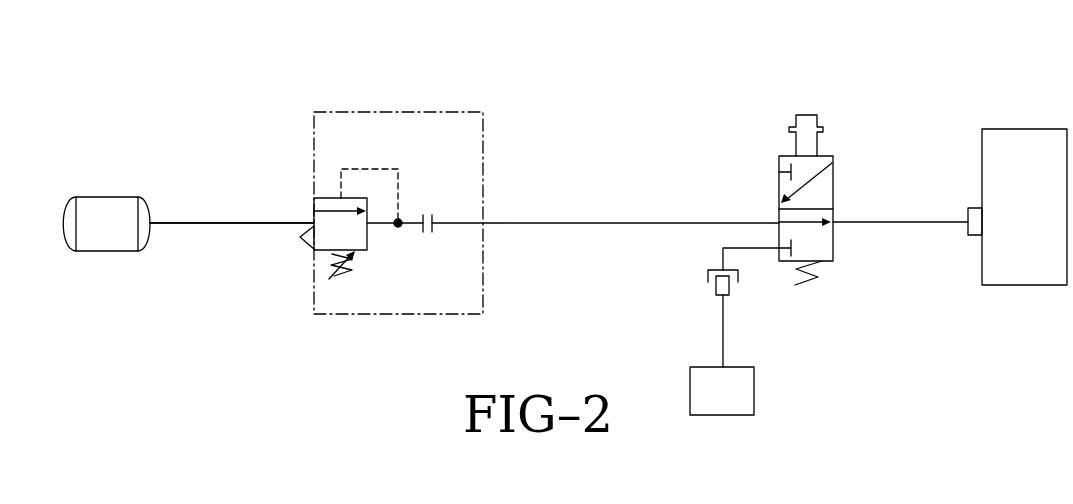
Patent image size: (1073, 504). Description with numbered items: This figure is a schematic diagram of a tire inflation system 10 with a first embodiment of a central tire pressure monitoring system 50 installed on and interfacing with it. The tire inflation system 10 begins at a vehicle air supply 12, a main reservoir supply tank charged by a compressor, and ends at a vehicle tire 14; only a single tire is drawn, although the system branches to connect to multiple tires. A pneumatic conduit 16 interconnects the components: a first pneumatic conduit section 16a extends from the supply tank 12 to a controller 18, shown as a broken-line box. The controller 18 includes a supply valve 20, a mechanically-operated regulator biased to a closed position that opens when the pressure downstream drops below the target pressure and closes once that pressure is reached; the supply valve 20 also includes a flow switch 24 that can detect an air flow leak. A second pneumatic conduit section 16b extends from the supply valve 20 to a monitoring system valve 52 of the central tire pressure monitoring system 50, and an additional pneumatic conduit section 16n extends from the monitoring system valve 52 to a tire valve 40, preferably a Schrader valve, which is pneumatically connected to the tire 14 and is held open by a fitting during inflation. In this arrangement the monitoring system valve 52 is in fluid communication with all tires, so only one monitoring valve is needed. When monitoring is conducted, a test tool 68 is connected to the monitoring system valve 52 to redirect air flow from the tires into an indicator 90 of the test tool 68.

The tire inflation system 10 is at (88, 138).
The vehicle air supply 12 is at (127, 238).
The vehicle tire 14 is at (982, 129).
The pneumatic conduit 16 is at (189, 220).
The first pneumatic conduit section 16a is at (245, 224).
The second pneumatic conduit section 16b is at (660, 223).
The additional pneumatic conduit section 16n is at (932, 222).
The controller 18 is at (305, 139).
The supply valve 20 is at (323, 250).
The flow switch 24 is at (428, 214).
The tire valve 40 is at (968, 236).
The central tire pressure monitoring system 50 is at (847, 120).
The monitoring system valve 52 is at (769, 167).
The test tool 68 is at (705, 298).
The indicator 90 is at (747, 367).